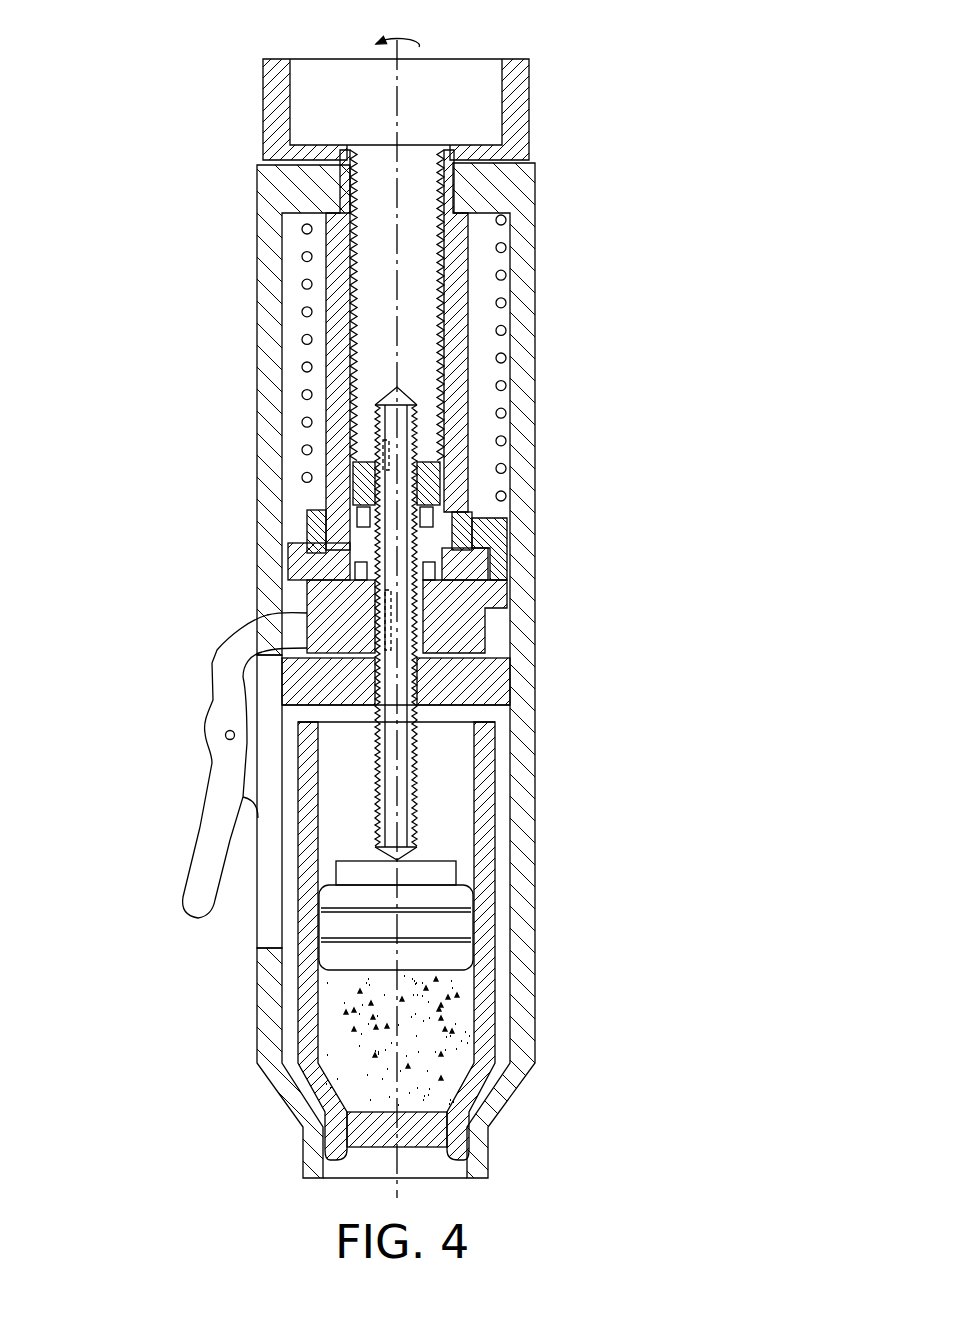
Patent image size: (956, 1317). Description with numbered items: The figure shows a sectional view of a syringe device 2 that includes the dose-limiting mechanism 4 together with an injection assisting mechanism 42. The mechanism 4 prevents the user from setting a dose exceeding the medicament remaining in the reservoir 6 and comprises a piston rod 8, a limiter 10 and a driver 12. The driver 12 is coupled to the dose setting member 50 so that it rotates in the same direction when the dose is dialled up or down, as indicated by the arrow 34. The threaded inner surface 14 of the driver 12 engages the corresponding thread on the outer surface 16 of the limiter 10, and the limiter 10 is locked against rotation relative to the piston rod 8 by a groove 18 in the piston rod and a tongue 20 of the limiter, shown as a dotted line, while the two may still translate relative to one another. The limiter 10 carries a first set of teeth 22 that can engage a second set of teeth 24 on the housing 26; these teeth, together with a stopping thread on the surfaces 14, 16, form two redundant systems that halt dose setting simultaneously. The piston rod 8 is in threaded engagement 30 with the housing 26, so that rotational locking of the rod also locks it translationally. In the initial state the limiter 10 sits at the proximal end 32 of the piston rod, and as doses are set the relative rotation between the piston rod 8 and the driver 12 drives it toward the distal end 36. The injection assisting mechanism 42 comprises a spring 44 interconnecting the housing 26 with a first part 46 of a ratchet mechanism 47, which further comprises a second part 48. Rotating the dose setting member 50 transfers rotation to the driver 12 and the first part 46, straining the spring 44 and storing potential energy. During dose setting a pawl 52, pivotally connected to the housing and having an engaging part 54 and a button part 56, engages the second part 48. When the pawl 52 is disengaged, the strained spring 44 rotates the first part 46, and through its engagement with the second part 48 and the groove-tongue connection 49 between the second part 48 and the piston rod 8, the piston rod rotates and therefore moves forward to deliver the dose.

The syringe device 2 is at (201, 121).
The mechanism 4 is at (150, 191).
The reservoir 6 is at (330, 1045).
The piston rod 8 is at (440, 432).
The limiter 10 is at (358, 465).
The driver 12 is at (455, 285).
The inner surface 14 is at (358, 260).
The outer surface 16 is at (352, 490).
The groove 18 is at (397, 803).
The tongue 20 is at (383, 455).
The first set of teeth 22 is at (335, 522).
The second set of teeth 24 is at (325, 572).
The housing 26 is at (525, 186).
The threaded engagement 30 is at (425, 682).
The proximal end 32 is at (412, 398).
The arrow 34 is at (420, 40).
The distal end 36 is at (402, 862).
The injection assisting mechanism 42 is at (517, 457).
The spring 44 is at (508, 470).
The first part 46 is at (473, 520).
The ratchet mechanism 47 is at (525, 548).
The second part 48 is at (472, 612).
The groove-tongue connection 49 is at (430, 625).
The dose setting member 50 is at (520, 97).
The pawl 52 is at (171, 732).
The engaging part 54 is at (275, 630).
The button part 56 is at (200, 885).